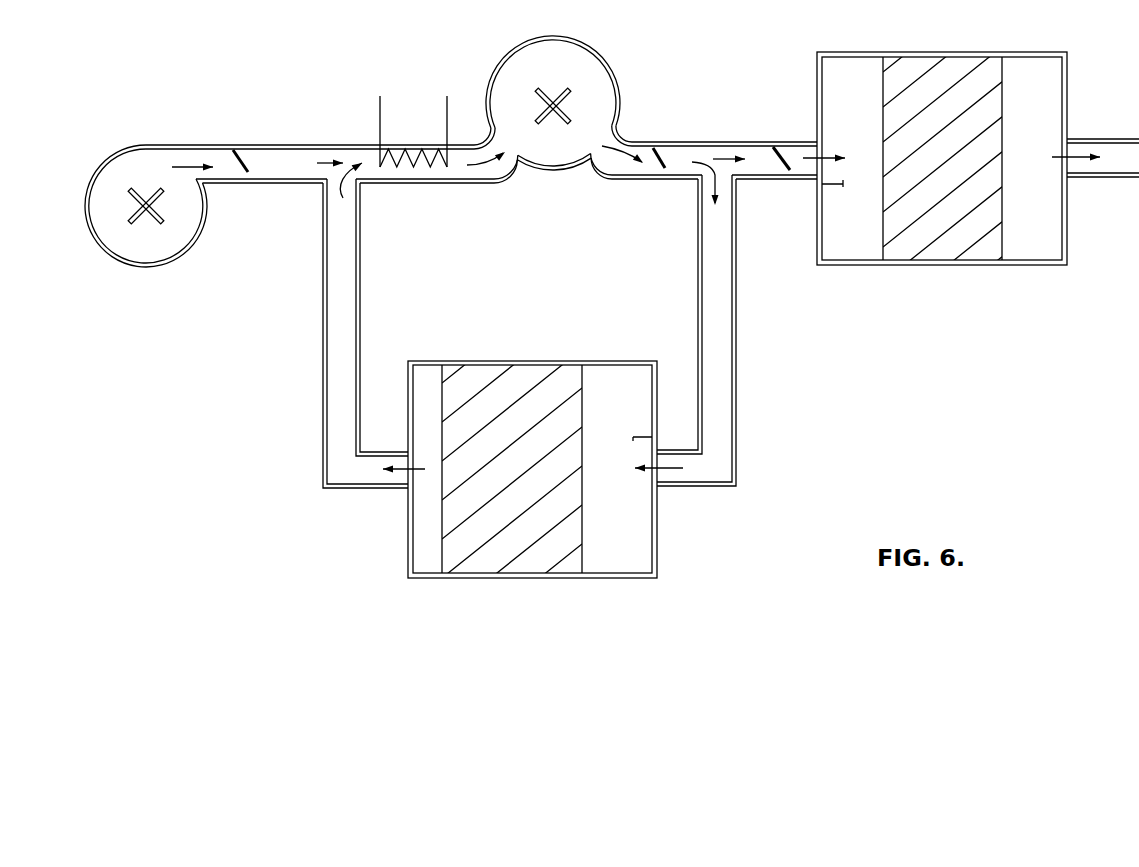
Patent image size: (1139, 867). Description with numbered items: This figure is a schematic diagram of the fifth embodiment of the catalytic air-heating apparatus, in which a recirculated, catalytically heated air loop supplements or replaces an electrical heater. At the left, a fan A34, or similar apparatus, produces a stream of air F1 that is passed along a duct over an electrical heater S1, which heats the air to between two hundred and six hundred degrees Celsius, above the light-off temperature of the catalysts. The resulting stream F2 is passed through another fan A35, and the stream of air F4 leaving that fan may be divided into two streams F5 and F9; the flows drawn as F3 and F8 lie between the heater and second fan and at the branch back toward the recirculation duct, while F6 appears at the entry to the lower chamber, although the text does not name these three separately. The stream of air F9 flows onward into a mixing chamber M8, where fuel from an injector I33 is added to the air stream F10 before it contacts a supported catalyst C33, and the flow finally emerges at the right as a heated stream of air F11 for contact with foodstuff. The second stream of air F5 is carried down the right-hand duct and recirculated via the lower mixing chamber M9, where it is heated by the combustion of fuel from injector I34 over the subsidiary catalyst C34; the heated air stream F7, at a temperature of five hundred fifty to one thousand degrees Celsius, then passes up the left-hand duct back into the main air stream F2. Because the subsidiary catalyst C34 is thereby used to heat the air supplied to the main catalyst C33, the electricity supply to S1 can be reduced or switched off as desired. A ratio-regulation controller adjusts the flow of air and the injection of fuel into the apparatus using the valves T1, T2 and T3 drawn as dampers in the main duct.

The fan A34 is at (153, 248).
The fan A35 is at (600, 84).
The electrical heater S1 is at (380, 117).
The valve T1 is at (252, 148).
The valve T2 is at (657, 148).
The valve T3 is at (789, 147).
The stream of air F1 is at (181, 167).
The stream of air F2 is at (330, 163).
The air flow F3 is at (483, 167).
The stream of air F4 is at (622, 176).
The second stream of air F5 is at (692, 164).
The air flow F6 is at (683, 470).
The heated air stream F7 is at (405, 468).
The air flow F8 is at (343, 198).
The stream of air F9 is at (722, 158).
The air stream F10 is at (822, 158).
The heated stream of air F11 is at (1068, 157).
The mixing chamber M8 is at (837, 248).
The supported catalyst C33 is at (958, 250).
The injector I33 is at (836, 190).
The mixing chamber M9 is at (640, 543).
The subsidiary catalyst C34 is at (556, 570).
The injector I34 is at (634, 424).